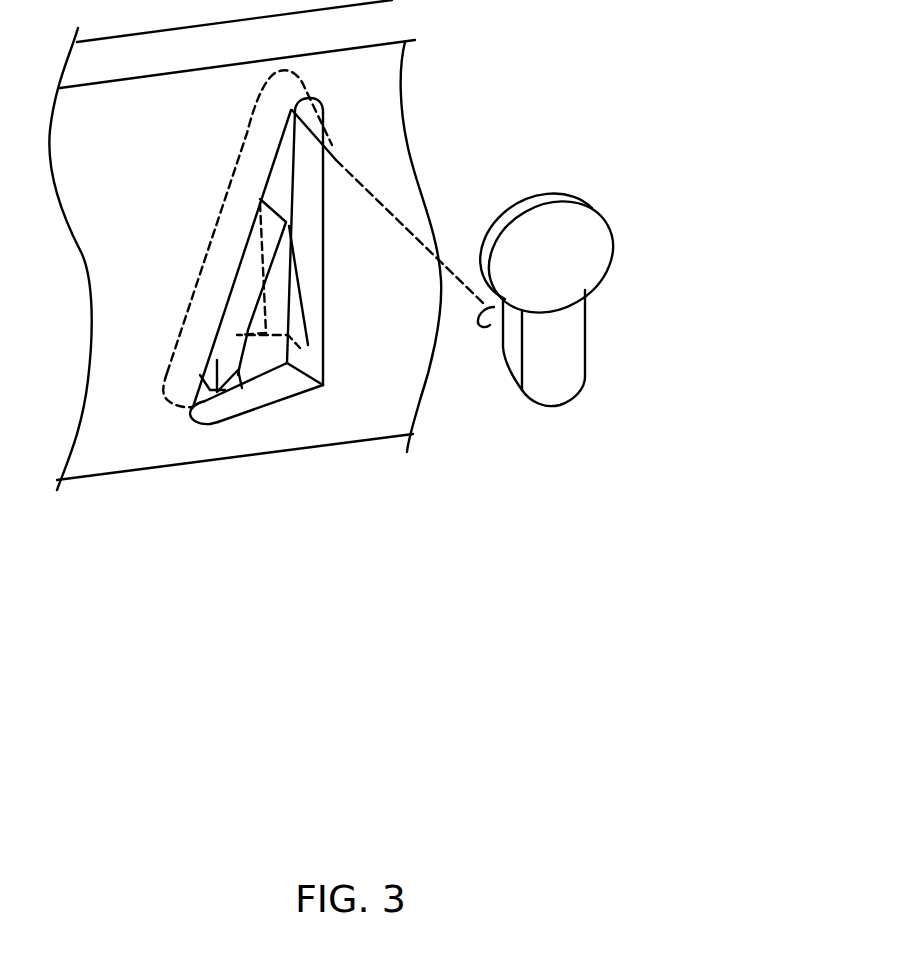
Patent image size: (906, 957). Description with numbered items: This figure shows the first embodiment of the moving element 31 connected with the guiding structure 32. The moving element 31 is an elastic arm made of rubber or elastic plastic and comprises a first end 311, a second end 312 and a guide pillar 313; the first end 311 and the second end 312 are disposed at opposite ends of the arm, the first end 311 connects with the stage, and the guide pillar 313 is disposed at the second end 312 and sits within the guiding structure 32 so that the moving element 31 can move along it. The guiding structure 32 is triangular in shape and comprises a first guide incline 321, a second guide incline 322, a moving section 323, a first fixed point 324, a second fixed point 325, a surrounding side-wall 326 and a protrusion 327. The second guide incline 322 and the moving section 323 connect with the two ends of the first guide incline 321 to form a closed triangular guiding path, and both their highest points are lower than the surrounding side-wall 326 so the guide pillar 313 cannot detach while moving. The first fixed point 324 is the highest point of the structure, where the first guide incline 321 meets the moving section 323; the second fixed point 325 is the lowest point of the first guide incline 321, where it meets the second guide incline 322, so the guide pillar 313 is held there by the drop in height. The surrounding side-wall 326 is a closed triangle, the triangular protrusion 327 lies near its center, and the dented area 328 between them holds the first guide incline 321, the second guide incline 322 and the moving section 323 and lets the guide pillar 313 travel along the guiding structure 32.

The moving element 31 is at (622, 208).
The first end 311 is at (505, 205).
The second end 312 is at (543, 388).
The guide pillar 313 is at (490, 314).
The guiding structure 32 is at (199, 212).
The first guide incline 321 is at (287, 223).
The second guide incline 322 is at (233, 420).
The moving section 323 is at (187, 362).
The first fixed point 324 is at (323, 105).
The second fixed point 325 is at (270, 394).
The surrounding side-wall 326 is at (327, 310).
The protrusion 327 is at (237, 333).
The dented area 328 is at (323, 385).